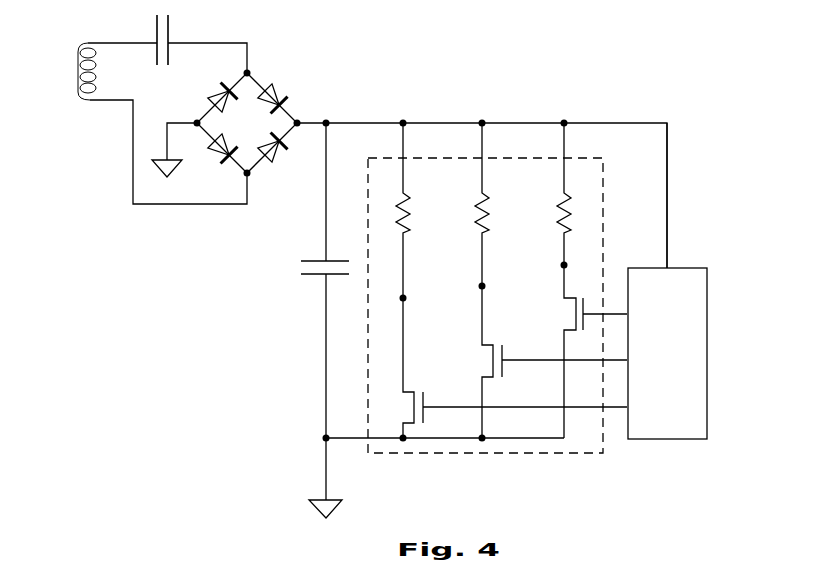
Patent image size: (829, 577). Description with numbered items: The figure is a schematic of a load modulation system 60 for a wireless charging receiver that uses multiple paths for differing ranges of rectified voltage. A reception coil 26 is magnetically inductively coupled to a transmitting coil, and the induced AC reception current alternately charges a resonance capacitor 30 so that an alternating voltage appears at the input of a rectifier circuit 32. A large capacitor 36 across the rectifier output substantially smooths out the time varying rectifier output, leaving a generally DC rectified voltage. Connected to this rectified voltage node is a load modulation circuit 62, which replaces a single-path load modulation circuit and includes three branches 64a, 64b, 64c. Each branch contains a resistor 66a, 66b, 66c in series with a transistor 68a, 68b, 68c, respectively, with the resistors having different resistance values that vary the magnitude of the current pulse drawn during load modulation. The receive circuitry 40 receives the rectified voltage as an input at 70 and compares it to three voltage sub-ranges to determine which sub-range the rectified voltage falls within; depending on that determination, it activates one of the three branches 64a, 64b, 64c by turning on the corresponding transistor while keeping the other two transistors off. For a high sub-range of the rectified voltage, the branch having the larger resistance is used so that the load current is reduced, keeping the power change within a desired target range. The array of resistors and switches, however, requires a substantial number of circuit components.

The reception coil 26 is at (90, 42).
The resonance capacitor 30 is at (168, 32).
The rectifier circuit 32 is at (257, 77).
The large capacitor 36 is at (313, 276).
The receive circuitry 40 is at (707, 328).
The load modulation system 60 is at (614, 57).
The load modulation circuit 62 is at (585, 157).
The first branch 64a is at (403, 460).
The second branch 64b is at (482, 460).
The third branch 64c is at (564, 460).
The first resistor 66a is at (408, 195).
The second resistor 66b is at (486, 195).
The third resistor 66c is at (568, 198).
The first transistor 68a is at (407, 390).
The second transistor 68b is at (485, 343).
The third transistor 68c is at (566, 328).
The input 70 is at (667, 266).